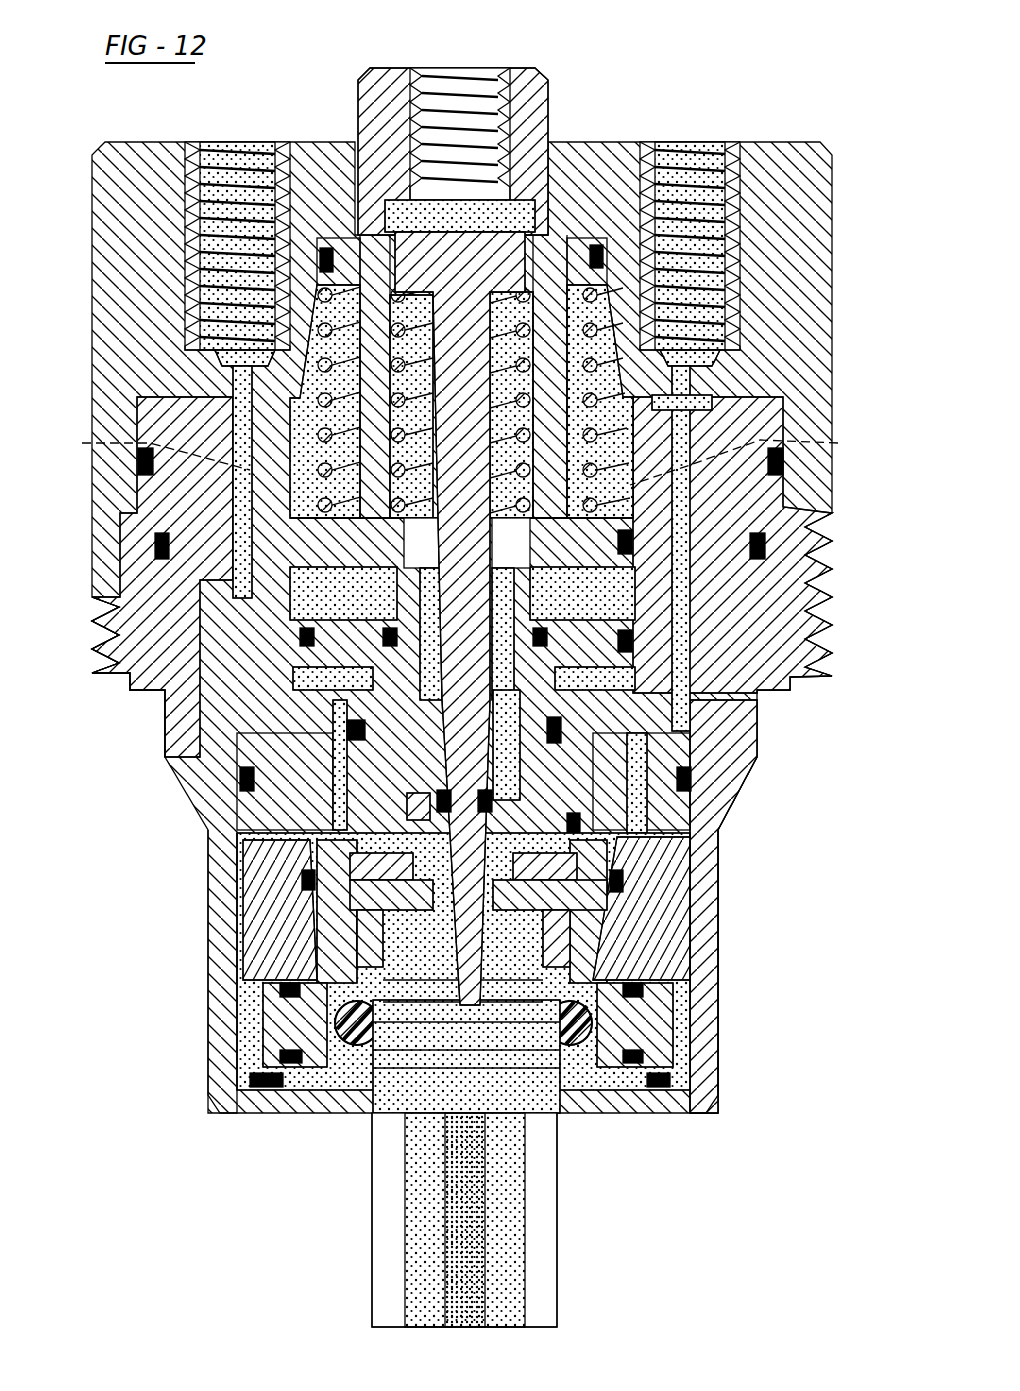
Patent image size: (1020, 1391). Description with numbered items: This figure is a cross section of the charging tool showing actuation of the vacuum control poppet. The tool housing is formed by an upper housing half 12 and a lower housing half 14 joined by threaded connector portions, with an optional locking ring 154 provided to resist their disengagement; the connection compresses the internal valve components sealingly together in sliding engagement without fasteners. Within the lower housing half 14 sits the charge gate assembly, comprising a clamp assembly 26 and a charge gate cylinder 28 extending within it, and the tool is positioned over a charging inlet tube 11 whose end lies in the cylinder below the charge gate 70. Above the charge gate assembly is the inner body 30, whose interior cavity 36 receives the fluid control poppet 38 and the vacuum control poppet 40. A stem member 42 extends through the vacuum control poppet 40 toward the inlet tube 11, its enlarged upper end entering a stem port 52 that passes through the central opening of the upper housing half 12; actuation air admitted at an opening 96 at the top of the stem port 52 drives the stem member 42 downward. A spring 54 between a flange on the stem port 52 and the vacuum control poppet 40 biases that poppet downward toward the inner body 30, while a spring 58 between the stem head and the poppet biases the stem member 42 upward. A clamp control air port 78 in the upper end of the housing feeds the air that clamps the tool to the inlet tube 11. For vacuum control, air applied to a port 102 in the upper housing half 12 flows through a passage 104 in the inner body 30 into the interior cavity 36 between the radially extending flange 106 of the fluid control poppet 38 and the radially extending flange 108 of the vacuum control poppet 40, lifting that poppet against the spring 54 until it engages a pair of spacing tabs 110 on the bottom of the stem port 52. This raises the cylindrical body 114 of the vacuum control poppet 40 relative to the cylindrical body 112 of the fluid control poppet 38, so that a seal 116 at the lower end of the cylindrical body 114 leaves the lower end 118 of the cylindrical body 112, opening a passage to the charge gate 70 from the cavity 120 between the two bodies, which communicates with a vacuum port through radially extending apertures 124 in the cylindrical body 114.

The charging inlet tube 11 is at (547, 1157).
The upper housing half 12 is at (92, 251).
The lower housing half 14 is at (208, 1031).
The clamp assembly 26 is at (266, 940).
The charge gate cylinder 28 is at (290, 862).
The inner body 30 is at (190, 657).
The interior cavity 36 is at (300, 595).
The fluid control poppet 38 is at (660, 700).
The vacuum control poppet 40 is at (795, 580).
The stem member 42 is at (410, 245).
The stem port 52 is at (549, 78).
The spring 54 is at (612, 335).
The spring 58 is at (512, 330).
The charge gate 70 is at (640, 930).
The clamp control air port 78 is at (716, 150).
The opening 96 is at (465, 68).
The port 102 is at (238, 152).
The passage 104 is at (140, 400).
The radially extending flange 106 is at (320, 700).
The radially extending flange 108 is at (300, 517).
The spacing tabs 110 is at (466, 458).
The cylindrical body 112 is at (520, 792).
The cylindrical body 114 is at (665, 610).
The seal 116 is at (648, 838).
The lower end 118 is at (648, 885).
The cavity 120 is at (300, 835).
The radially extending apertures 124 is at (365, 790).
The locking ring 154 is at (90, 645).